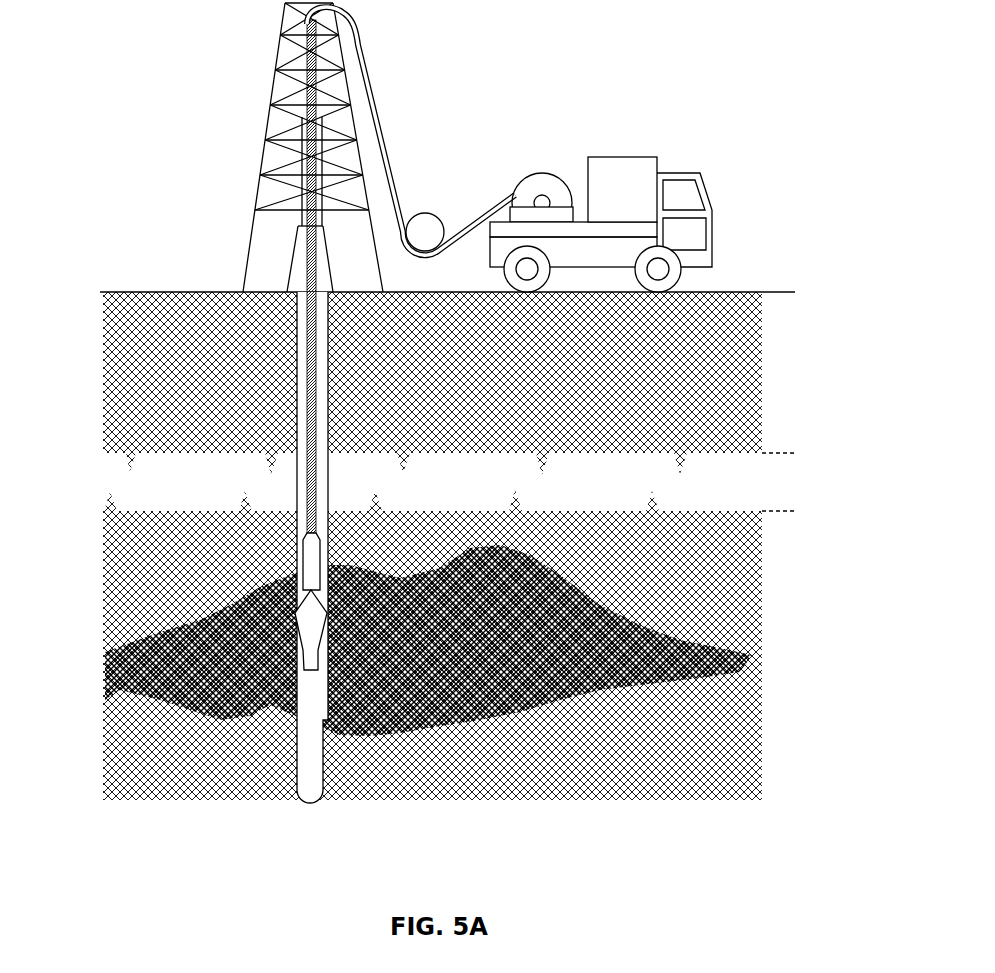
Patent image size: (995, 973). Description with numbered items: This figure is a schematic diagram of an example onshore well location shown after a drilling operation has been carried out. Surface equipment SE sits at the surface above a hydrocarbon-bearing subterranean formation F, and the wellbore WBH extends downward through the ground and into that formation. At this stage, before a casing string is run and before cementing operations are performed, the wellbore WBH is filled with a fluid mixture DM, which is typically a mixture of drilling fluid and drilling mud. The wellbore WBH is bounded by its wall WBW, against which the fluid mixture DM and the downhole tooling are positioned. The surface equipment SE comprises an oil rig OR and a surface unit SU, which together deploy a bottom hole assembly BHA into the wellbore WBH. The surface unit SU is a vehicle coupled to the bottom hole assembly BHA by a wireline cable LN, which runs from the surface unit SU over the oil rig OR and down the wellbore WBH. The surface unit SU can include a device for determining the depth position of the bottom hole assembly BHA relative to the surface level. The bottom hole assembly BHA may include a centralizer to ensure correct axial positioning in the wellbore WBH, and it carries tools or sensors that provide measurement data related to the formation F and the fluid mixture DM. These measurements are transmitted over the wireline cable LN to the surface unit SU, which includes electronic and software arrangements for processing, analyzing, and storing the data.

The oil rig OR is at (270, 92).
The surface equipment SE is at (433, 98).
The surface unit SU is at (586, 158).
The wireline cable LN is at (305, 303).
The wellbore WBH is at (298, 353).
The wellbore wall WBW is at (325, 432).
The bottom hole assembly BHA is at (338, 572).
The hydrocarbon-bearing subterranean formation F is at (172, 662).
The fluid mixture DM is at (305, 768).